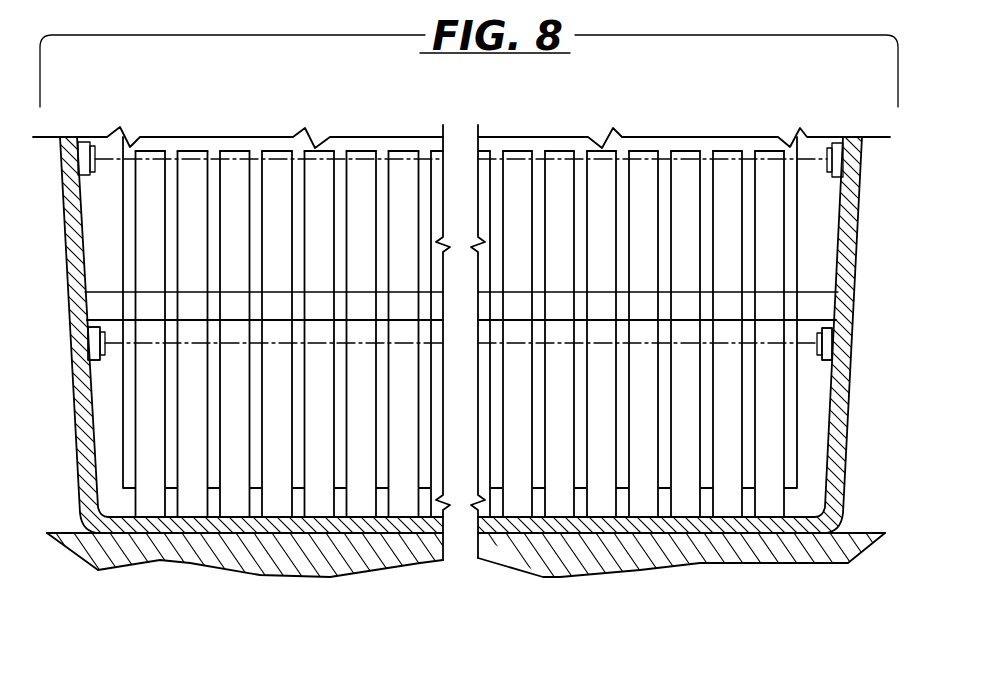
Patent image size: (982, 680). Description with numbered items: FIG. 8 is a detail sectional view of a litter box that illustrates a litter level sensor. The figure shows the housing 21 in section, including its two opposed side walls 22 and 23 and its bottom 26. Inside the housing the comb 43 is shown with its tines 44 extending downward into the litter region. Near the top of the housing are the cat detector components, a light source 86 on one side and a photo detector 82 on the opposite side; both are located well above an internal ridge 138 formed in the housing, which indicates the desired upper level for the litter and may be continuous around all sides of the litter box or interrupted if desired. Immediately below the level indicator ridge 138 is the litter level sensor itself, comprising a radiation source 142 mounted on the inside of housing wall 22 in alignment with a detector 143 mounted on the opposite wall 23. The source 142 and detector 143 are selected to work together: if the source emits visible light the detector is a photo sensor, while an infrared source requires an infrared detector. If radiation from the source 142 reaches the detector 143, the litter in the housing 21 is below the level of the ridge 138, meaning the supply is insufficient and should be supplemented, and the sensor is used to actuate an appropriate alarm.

The housing 21 is at (798, 446).
The side wall 22 is at (88, 450).
The side wall 23 is at (855, 250).
The bottom 26 is at (604, 540).
The comb 43 is at (357, 147).
The tines 44 is at (707, 188).
The photo detector 82 is at (837, 162).
The light source 86 is at (83, 160).
The internal ridge 138 is at (100, 303).
The radiation source 142 is at (93, 347).
The detector 143 is at (827, 357).